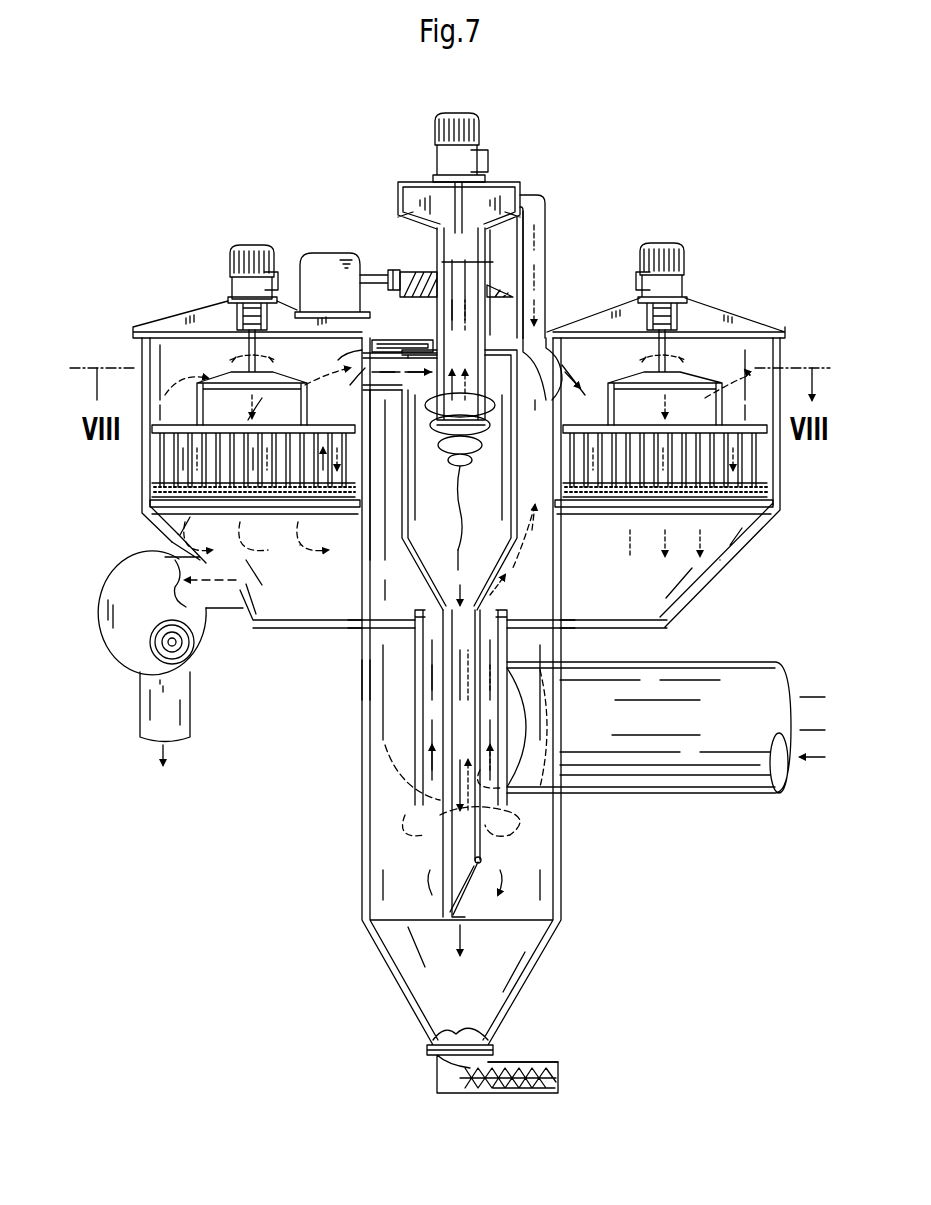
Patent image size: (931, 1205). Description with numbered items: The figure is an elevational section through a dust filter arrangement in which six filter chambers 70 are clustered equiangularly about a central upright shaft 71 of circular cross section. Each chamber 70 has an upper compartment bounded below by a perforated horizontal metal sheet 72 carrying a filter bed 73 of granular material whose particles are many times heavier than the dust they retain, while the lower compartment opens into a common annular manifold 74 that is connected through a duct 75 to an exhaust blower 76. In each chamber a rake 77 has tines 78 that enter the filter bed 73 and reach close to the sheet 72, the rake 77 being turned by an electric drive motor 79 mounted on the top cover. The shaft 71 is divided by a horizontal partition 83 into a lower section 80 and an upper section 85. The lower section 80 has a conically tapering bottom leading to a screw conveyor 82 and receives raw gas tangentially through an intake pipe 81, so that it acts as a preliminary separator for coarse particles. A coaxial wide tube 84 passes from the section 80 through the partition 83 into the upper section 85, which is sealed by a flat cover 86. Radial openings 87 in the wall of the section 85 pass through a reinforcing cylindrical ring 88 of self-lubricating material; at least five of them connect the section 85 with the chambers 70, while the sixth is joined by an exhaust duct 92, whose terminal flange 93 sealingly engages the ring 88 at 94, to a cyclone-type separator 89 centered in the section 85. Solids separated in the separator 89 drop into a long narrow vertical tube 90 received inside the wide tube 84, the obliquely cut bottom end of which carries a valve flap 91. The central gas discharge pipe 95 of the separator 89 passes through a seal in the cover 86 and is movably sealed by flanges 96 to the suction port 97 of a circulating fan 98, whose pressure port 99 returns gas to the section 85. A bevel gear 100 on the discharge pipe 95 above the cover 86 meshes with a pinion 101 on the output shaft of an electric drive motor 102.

The filter chamber 70 is at (142, 352).
The central upright shaft 71 is at (362, 585).
The perforated horizontal metal sheet 72 is at (219, 506).
The filter bed 73 is at (270, 506).
The common manifold 74 is at (722, 555).
The duct 75 is at (228, 610).
The exhaust blower 76 is at (122, 672).
The rake 77 is at (326, 425).
The tines 78 is at (160, 464).
The electric drive motor 79 is at (252, 246).
The lower section 80 is at (362, 878).
The intake pipe 81 is at (682, 793).
The screw conveyor 82 is at (524, 1062).
The horizontal partition 83 is at (362, 684).
The wide tube 84 is at (415, 720).
The upper section 85 is at (386, 440).
The flat cover 86 is at (386, 340).
The radial openings 87 is at (572, 358).
The cylindrical ring 88 is at (545, 395).
The cyclone-type separator 89 is at (428, 580).
The vertical tube 90 is at (443, 875).
The valve flap 91 is at (460, 900).
The exhaust duct 92 is at (410, 347).
The terminal flange 93 is at (362, 395).
The sealing engagement location 94 is at (388, 400).
The central gas discharge pipe 95 is at (485, 320).
The flanges 96 is at (487, 260).
The suction port 97 is at (496, 267).
The circulating fan 98 is at (414, 182).
The pressure port 99 is at (540, 200).
The bevel gear 100 is at (412, 272).
The pinion 101 is at (388, 275).
The electric drive motor 102 is at (332, 253).